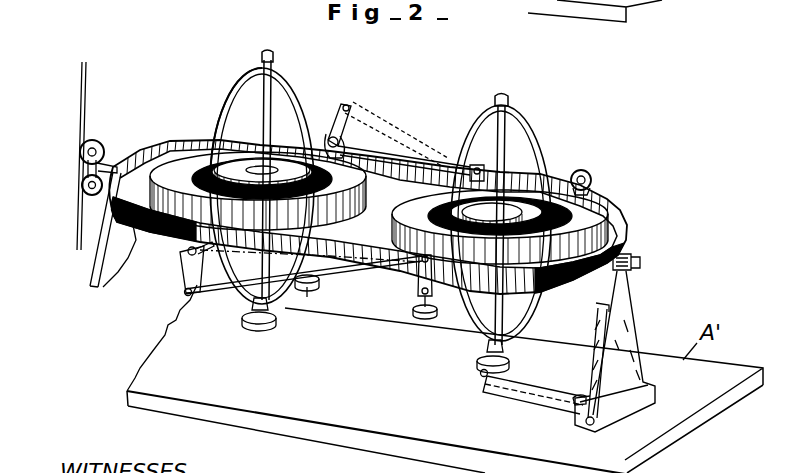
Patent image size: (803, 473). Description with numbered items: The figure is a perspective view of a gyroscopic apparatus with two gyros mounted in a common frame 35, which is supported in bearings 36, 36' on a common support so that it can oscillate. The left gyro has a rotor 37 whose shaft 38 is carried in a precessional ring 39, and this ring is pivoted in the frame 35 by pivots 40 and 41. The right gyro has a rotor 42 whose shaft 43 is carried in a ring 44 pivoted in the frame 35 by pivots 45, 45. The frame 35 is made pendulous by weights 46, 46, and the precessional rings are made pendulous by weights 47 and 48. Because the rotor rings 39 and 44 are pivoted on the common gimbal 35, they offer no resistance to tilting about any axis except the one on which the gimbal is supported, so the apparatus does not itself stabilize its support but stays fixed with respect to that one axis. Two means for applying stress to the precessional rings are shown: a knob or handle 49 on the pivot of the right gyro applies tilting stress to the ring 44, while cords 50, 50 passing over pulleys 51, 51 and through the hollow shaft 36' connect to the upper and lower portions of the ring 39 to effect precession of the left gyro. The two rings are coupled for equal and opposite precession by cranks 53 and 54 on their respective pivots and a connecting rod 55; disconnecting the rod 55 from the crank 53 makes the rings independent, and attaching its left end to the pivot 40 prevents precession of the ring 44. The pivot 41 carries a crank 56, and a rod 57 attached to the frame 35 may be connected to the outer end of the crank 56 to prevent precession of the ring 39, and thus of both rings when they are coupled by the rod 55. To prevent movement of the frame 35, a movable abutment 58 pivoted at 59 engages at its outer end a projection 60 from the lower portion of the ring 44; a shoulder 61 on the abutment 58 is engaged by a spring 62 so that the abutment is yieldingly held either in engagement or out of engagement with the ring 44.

The frame 35 is at (628, 214).
The bearing 36 is at (651, 258).
The bearing 36' is at (118, 199).
The rotor 37 is at (183, 167).
The shaft 38 is at (273, 102).
The precessional ring 39 is at (243, 78).
The pivot 40 is at (187, 257).
The pivot 41 is at (323, 147).
The rotor 42 is at (583, 217).
The shaft 43 is at (505, 150).
The ring 44 is at (520, 112).
The pivot 45 is at (440, 302).
The weight 46 is at (307, 293).
The weight 47 is at (250, 322).
The weight 48 is at (479, 362).
The knob or handle 49 is at (591, 172).
The cord 50 is at (82, 73).
The pulley 51 is at (82, 147).
The crank 53 is at (190, 280).
The crank 54 is at (417, 283).
The connecting rod 55 is at (348, 267).
The crank 56 is at (343, 128).
The rod 57 is at (407, 152).
The movable abutment 58 is at (520, 392).
The pivot 59 is at (591, 426).
The projection 60 is at (482, 378).
The shoulder 61 is at (582, 397).
The spring 62 is at (592, 335).